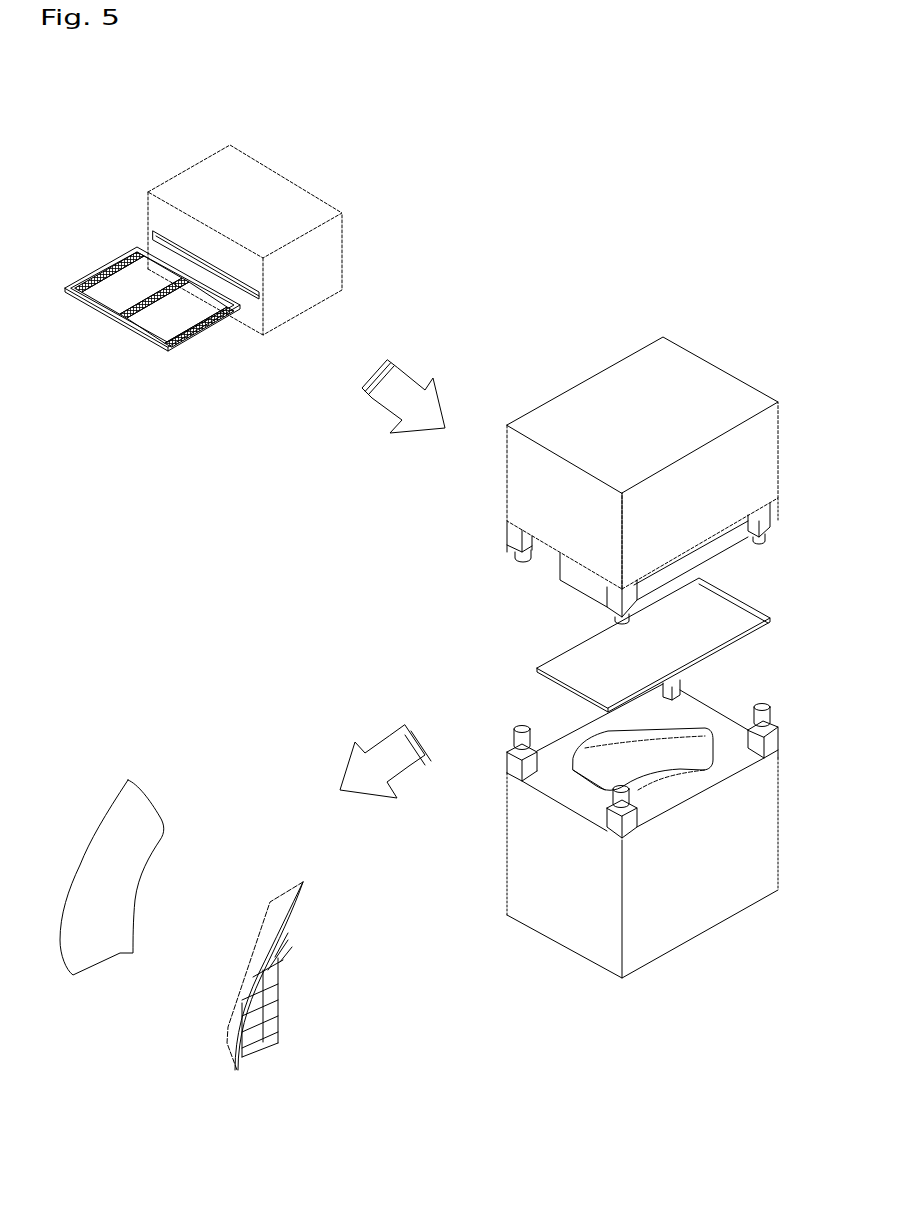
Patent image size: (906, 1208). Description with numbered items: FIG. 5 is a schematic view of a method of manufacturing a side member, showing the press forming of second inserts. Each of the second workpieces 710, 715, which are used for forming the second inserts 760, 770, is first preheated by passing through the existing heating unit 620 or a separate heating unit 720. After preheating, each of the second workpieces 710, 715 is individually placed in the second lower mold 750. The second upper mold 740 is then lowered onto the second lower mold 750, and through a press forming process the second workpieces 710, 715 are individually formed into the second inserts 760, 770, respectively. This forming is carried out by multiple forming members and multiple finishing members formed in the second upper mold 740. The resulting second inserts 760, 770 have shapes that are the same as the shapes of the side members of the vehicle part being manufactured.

The heating unit 620 is at (254, 199).
The separate heating unit 720 is at (243, 197).
The second workpiece 710 is at (121, 290).
The second workpiece 715 is at (161, 313).
The second upper mold 740 is at (625, 395).
The second lower mold 750 is at (555, 838).
The second insert 760 is at (108, 877).
The second insert 770 is at (270, 975).